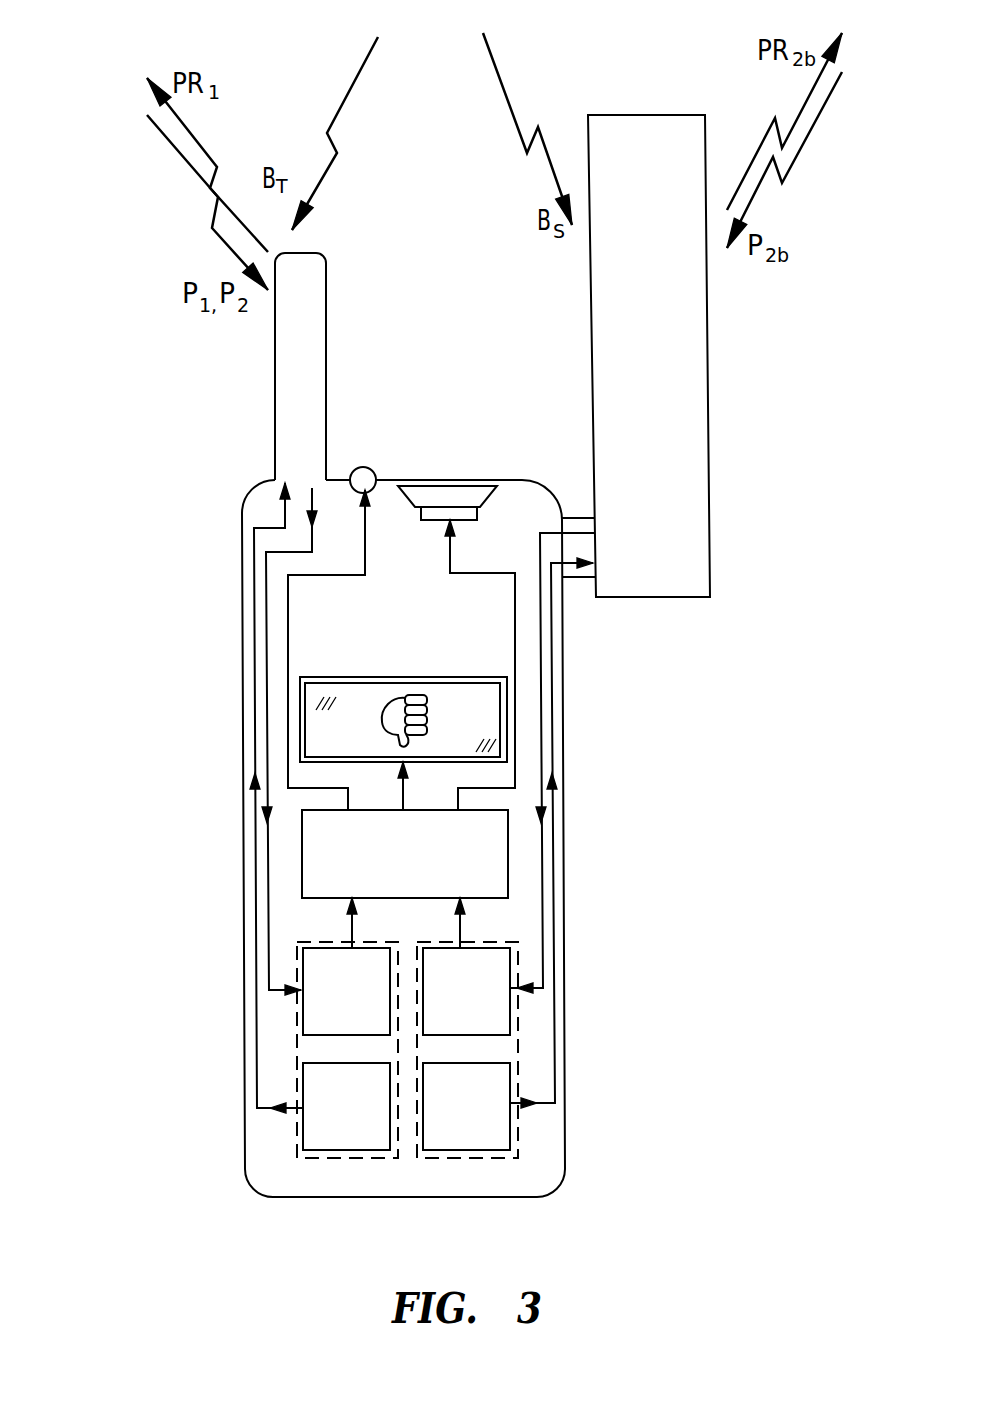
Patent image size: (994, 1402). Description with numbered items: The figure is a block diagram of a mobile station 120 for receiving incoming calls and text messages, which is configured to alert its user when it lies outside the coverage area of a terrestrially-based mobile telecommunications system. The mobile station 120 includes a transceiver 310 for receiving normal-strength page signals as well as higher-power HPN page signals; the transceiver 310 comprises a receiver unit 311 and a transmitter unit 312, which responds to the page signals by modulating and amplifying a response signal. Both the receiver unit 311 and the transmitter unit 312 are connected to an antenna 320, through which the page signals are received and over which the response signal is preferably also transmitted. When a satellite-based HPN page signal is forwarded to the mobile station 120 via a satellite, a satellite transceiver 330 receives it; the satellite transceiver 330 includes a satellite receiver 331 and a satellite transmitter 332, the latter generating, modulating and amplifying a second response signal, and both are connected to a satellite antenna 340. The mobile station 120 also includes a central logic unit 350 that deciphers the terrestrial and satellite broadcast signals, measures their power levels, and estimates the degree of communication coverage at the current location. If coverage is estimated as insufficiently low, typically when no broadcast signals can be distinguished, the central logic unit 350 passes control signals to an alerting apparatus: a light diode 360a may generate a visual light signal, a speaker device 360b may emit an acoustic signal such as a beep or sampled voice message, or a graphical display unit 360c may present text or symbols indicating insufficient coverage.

The mobile station 120 is at (242, 510).
The antenna 320 is at (318, 253).
The satellite antenna 340 is at (612, 115).
The central logic unit 350 is at (508, 850).
The light diode 360a is at (356, 468).
The speaker device 360b is at (437, 486).
The graphical display unit 360c is at (507, 719).
The transceiver 310 is at (362, 1158).
The receiver unit 311 is at (320, 1035).
The transmitter unit 312 is at (318, 1153).
The satellite transceiver 330 is at (452, 1158).
The satellite receiver 331 is at (495, 1035).
The satellite transmitter 332 is at (495, 1153).